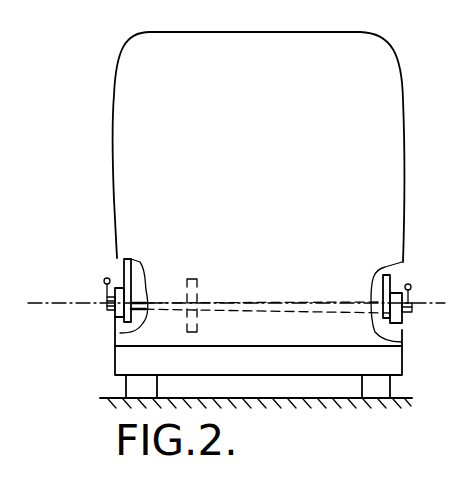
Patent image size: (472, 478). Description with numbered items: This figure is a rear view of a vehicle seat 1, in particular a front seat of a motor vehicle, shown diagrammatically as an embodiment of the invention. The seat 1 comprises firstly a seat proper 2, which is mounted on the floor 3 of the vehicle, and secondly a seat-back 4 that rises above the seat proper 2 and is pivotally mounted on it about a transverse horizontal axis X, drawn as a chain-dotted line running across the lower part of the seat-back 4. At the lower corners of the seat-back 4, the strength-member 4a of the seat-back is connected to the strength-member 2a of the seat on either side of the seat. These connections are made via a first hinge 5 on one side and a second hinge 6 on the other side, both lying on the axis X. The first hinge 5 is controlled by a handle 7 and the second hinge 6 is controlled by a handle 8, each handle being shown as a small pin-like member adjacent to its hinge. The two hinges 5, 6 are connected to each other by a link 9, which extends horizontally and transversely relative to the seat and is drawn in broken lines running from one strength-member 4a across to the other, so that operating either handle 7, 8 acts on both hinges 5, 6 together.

The vehicle seat 1 is at (211, 147).
The seat proper 2 is at (112, 362).
The strength-member of the seat 2a is at (113, 328).
The floor 3 is at (293, 402).
The seat-back 4 is at (98, 158).
The strength-member of the seat-back 4a is at (123, 262).
The first hinge 5 is at (110, 295).
The second hinge 6 is at (403, 320).
The handle 7 is at (105, 279).
The handle 8 is at (411, 289).
The link 9 is at (270, 299).
The transverse horizontal axis X is at (236, 305).